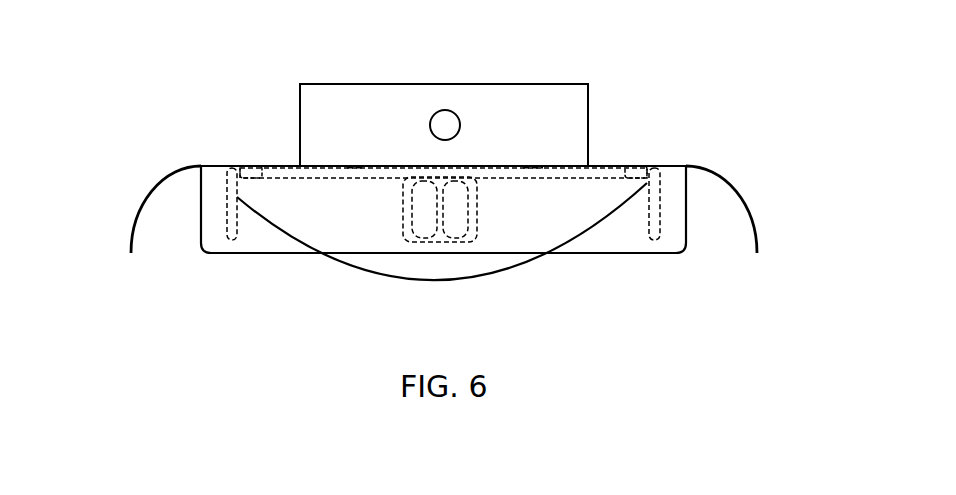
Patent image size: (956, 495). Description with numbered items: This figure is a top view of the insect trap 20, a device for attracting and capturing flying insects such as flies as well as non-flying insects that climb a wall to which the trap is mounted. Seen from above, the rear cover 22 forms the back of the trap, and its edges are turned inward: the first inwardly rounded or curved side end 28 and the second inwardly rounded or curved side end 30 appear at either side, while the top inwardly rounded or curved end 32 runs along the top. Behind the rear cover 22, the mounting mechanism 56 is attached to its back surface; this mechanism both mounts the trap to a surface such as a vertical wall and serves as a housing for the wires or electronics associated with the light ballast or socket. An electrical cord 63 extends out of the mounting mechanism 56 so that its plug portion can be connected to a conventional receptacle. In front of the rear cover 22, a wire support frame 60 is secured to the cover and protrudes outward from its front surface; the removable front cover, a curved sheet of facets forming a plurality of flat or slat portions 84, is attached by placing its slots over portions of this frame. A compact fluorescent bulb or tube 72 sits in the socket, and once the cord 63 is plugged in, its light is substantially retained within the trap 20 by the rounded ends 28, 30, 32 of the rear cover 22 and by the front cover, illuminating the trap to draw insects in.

The insect trap 20 is at (132, 107).
The rear cover 22 is at (672, 160).
The first inwardly rounded or curved side end 28 is at (137, 200).
The second inwardly rounded or curved side end 30 is at (752, 205).
The top inwardly rounded or curved end 32 is at (626, 240).
The mounting mechanism 56 is at (550, 95).
The wire support frame 60 is at (607, 167).
The electrical cord 63 is at (444, 110).
The compact fluorescent bulb or tube 72 is at (470, 211).
The flat or slat portions 84 is at (366, 274).